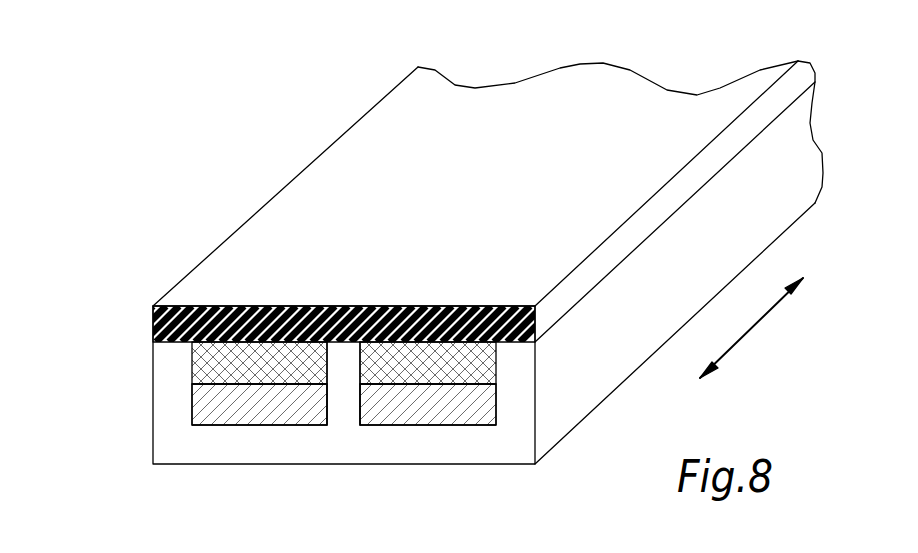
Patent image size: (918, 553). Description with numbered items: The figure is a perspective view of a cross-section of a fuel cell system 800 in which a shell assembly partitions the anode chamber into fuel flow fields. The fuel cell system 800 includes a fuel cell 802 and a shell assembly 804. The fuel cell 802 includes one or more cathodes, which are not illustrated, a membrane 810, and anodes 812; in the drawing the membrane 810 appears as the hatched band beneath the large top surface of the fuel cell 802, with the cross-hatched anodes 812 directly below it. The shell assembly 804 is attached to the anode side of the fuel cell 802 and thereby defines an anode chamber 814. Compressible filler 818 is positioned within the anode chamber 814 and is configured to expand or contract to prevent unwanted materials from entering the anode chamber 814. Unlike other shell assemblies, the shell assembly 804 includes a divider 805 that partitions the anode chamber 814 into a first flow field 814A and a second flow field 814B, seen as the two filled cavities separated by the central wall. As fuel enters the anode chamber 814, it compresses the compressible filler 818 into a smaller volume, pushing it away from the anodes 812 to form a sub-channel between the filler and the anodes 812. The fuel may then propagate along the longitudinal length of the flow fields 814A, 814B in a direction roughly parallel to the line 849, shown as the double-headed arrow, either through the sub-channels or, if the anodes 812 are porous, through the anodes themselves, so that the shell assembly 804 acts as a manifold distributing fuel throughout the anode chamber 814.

The fuel cell system 800 is at (138, 91).
The fuel cell 802 is at (268, 202).
The shell assembly 804 is at (153, 440).
The divider 805 is at (345, 353).
The membrane 810 is at (153, 323).
The anodes 812 is at (438, 355).
The anode chamber 814 is at (287, 427).
The first flow field 814A is at (192, 392).
The second flow field 814B is at (496, 412).
The compressible filler 818 is at (248, 410).
The line 849 is at (755, 327).